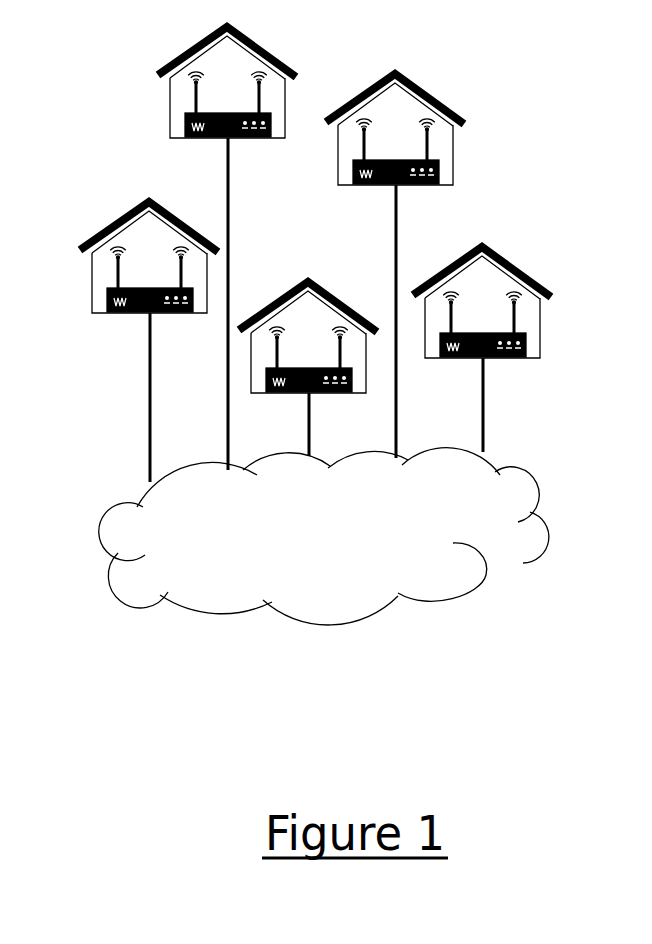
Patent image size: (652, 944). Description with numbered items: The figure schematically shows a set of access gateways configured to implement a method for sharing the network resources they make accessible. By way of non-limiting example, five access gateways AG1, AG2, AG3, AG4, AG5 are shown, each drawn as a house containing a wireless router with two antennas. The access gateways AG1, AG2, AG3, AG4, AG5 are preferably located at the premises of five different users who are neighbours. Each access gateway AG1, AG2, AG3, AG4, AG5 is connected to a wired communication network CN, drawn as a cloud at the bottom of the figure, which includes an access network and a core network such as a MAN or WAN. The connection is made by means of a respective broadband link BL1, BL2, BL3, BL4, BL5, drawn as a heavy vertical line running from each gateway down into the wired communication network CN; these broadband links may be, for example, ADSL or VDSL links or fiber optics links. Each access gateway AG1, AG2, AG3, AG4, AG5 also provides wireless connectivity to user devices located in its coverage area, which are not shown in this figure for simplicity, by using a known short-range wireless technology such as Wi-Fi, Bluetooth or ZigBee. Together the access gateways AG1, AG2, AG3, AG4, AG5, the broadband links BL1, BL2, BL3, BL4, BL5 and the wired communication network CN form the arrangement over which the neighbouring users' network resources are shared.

The access gateway AG1 is at (127, 312).
The access gateway AG2 is at (462, 356).
The access gateway AG3 is at (280, 392).
The access gateway AG4 is at (205, 136).
The access gateway AG5 is at (372, 183).
The broadband link BL1 is at (150, 423).
The broadband link BL2 is at (483, 420).
The broadband link BL3 is at (313, 419).
The broadband link BL4 is at (230, 197).
The broadband link BL5 is at (400, 247).
The wired communication network CN is at (550, 528).